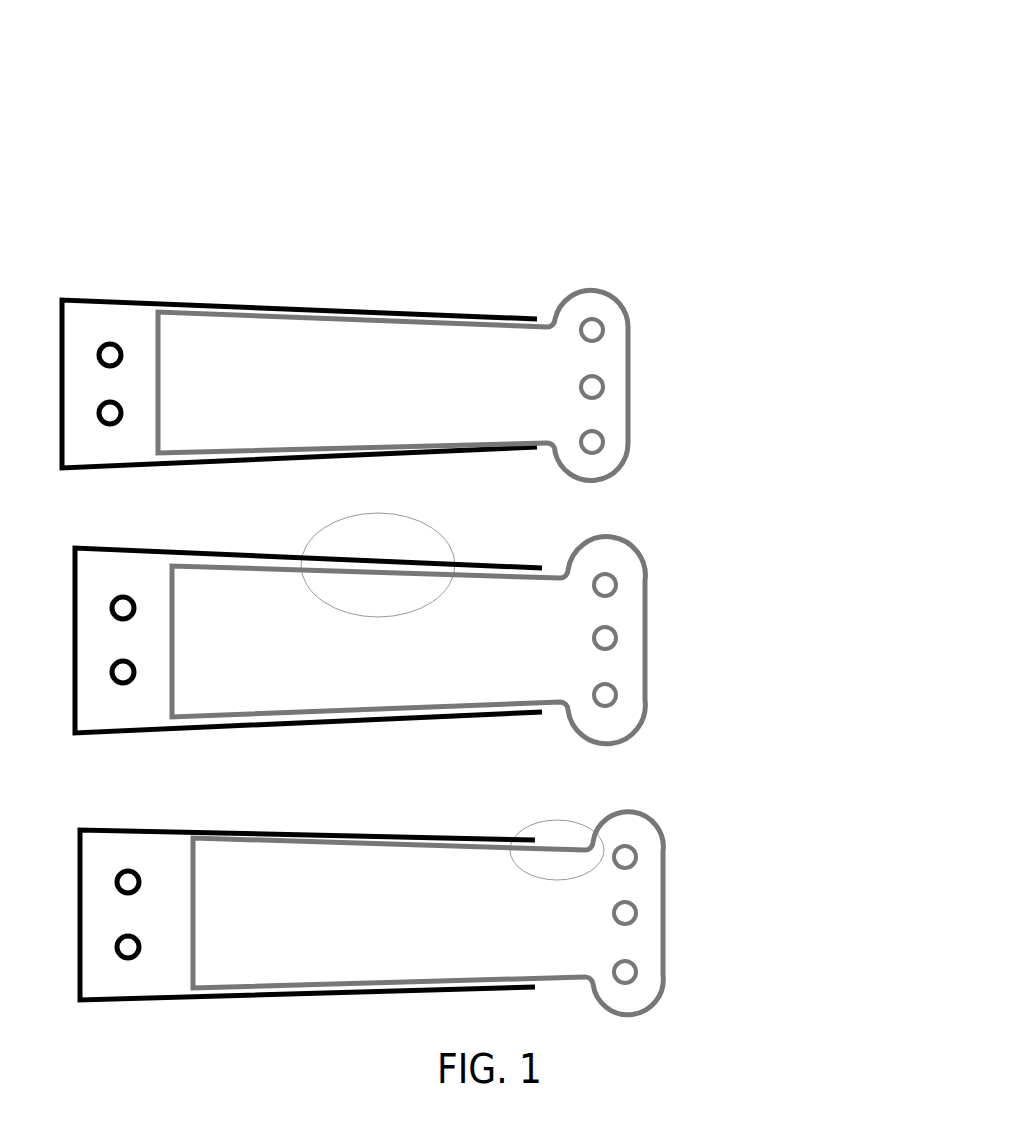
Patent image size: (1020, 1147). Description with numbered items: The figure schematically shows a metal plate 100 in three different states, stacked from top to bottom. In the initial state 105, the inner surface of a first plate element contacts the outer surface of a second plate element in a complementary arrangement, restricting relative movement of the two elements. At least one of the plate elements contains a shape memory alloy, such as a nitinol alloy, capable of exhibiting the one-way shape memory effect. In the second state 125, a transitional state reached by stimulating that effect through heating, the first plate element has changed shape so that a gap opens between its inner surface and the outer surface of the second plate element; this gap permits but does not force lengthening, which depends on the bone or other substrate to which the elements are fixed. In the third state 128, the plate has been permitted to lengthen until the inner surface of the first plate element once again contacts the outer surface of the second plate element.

The plate 100 is at (142, 111).
The initial state 105 is at (452, 353).
The second state 125 is at (481, 619).
The third state 128 is at (462, 898).